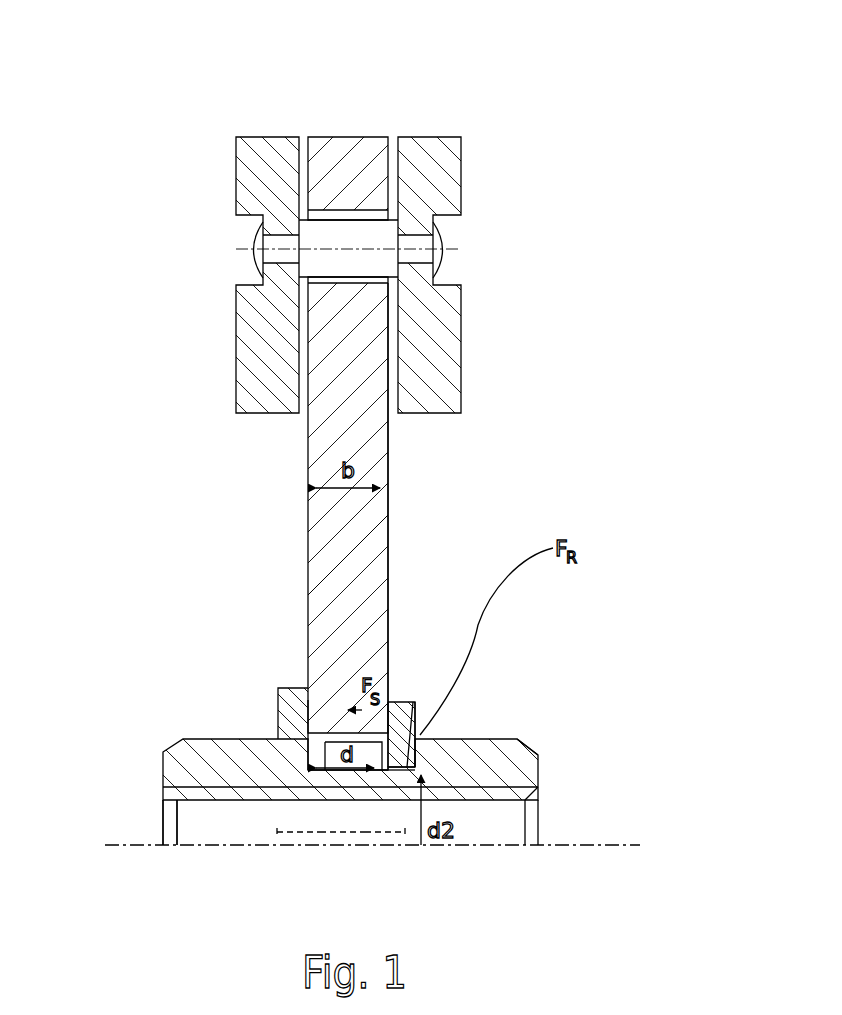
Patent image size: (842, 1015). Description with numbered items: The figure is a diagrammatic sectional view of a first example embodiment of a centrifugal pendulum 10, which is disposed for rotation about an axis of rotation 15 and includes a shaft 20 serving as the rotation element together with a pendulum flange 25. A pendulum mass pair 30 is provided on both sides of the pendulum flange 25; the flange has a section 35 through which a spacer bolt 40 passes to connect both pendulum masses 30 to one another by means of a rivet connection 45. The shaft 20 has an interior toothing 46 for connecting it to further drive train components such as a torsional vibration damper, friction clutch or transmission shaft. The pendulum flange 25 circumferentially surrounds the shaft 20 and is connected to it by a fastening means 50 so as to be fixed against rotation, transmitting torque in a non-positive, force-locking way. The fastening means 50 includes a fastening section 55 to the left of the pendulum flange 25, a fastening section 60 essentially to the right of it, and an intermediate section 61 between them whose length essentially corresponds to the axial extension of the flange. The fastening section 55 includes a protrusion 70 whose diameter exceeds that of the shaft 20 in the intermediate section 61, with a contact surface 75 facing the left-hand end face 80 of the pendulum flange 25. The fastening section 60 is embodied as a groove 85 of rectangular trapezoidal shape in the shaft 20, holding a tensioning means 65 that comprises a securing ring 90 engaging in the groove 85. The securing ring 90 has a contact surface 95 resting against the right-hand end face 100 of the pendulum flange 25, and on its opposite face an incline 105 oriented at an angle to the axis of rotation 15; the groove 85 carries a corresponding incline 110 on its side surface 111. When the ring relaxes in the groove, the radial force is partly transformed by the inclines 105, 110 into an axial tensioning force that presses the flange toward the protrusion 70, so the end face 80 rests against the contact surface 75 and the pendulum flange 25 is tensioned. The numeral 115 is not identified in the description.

The centrifugal pendulum 10 is at (547, 418).
The axis of rotation 15 is at (582, 845).
The shaft 20 is at (517, 740).
The pendulum flange 25 is at (390, 438).
The pendulum mass pair 30 is at (459, 70).
The section 35 is at (356, 210).
The spacer bolt 40 is at (383, 233).
The rivet connection 45 is at (442, 260).
The interior toothing 46 is at (163, 803).
The fastening means 50 is at (442, 581).
The fastening section 55 is at (290, 834).
The fastening section 60 is at (393, 834).
The intermediate section 61 is at (345, 834).
The tensioning means 65 is at (484, 665).
The protrusion 70 is at (292, 712).
The contact surface 75 is at (322, 550).
The end face 80 is at (302, 727).
The groove 85 is at (412, 755).
The securing ring 90 is at (397, 738).
The contact surface 95 is at (352, 732).
The end face 100 is at (388, 500).
The incline 105 is at (420, 736).
The incline 110 is at (418, 765).
The side surface 111 is at (538, 758).
The groove bottom edge 115 is at (420, 792).